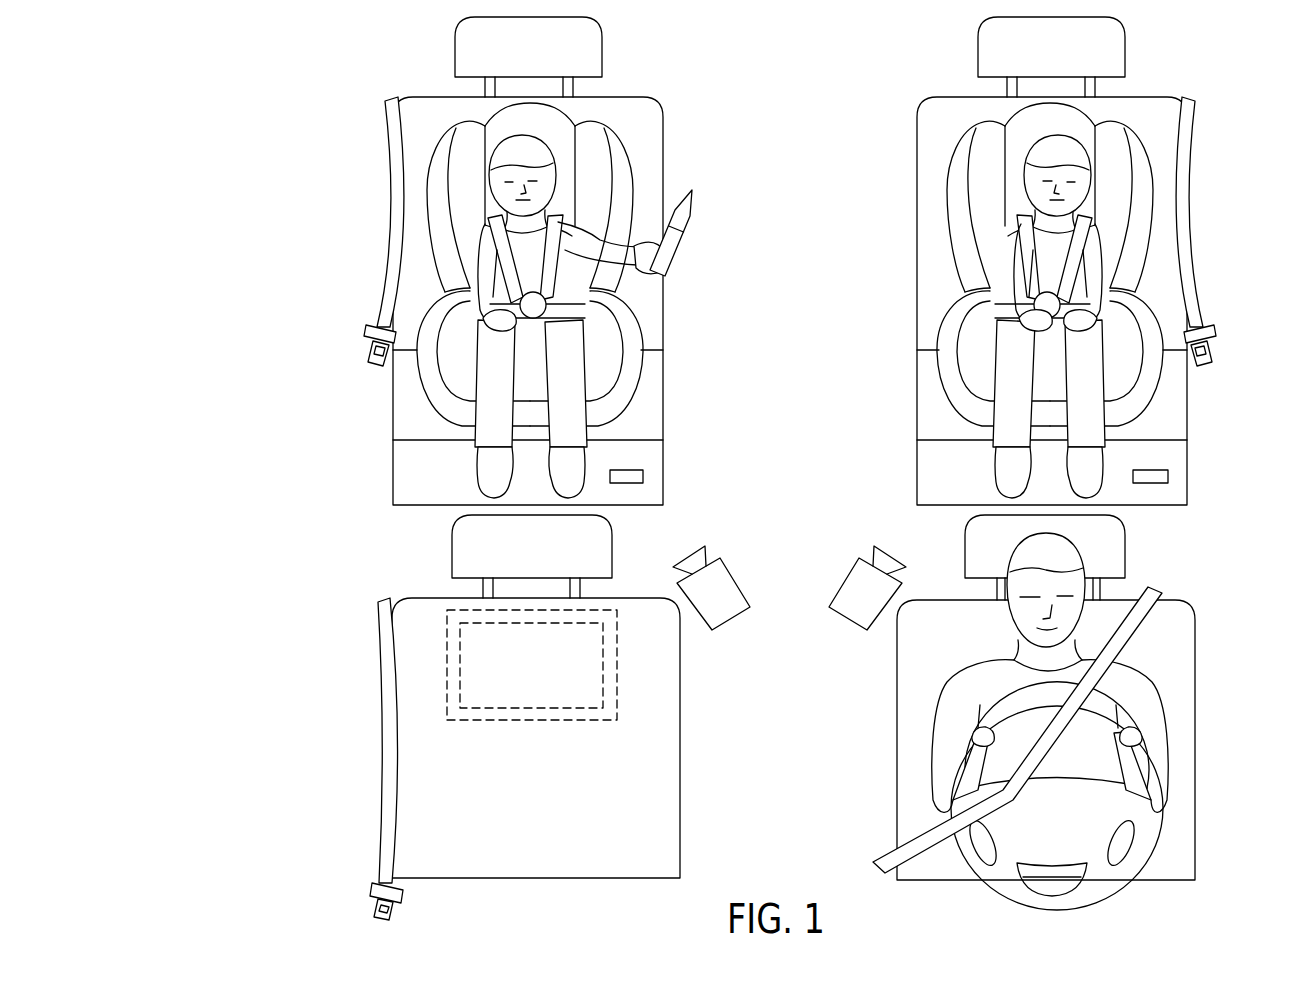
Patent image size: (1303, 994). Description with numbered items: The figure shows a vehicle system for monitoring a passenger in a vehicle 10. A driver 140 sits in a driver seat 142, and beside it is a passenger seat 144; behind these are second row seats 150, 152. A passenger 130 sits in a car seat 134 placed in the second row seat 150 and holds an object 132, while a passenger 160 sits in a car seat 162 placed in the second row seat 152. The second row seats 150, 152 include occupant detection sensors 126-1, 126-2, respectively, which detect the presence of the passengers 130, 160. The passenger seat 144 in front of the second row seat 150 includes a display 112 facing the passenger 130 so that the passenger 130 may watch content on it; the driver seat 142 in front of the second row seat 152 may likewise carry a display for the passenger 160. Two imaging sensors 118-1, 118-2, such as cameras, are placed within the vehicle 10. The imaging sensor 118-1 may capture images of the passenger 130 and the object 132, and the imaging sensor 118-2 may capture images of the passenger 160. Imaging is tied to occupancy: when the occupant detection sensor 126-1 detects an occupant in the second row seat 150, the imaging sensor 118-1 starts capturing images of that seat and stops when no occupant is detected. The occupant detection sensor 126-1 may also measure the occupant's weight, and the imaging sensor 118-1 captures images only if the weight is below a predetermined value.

The vehicle 10 is at (215, 125).
The display 112 is at (530, 720).
The imaging sensor 118-1 is at (747, 536).
The imaging sensor 118-2 is at (852, 554).
The occupant detection sensor 126-1 is at (643, 476).
The occupant detection sensor 126-2 is at (1168, 476).
The passenger 130 is at (462, 267).
The object 132 is at (678, 247).
The car seat 134 is at (607, 126).
The driver 140 is at (1167, 730).
The driver seat 142 is at (1173, 598).
The passenger seat 144 is at (423, 598).
The second row seat 150 is at (423, 97).
The second row seat 152 is at (1155, 97).
The passenger 160 is at (1118, 267).
The car seat 162 is at (965, 126).